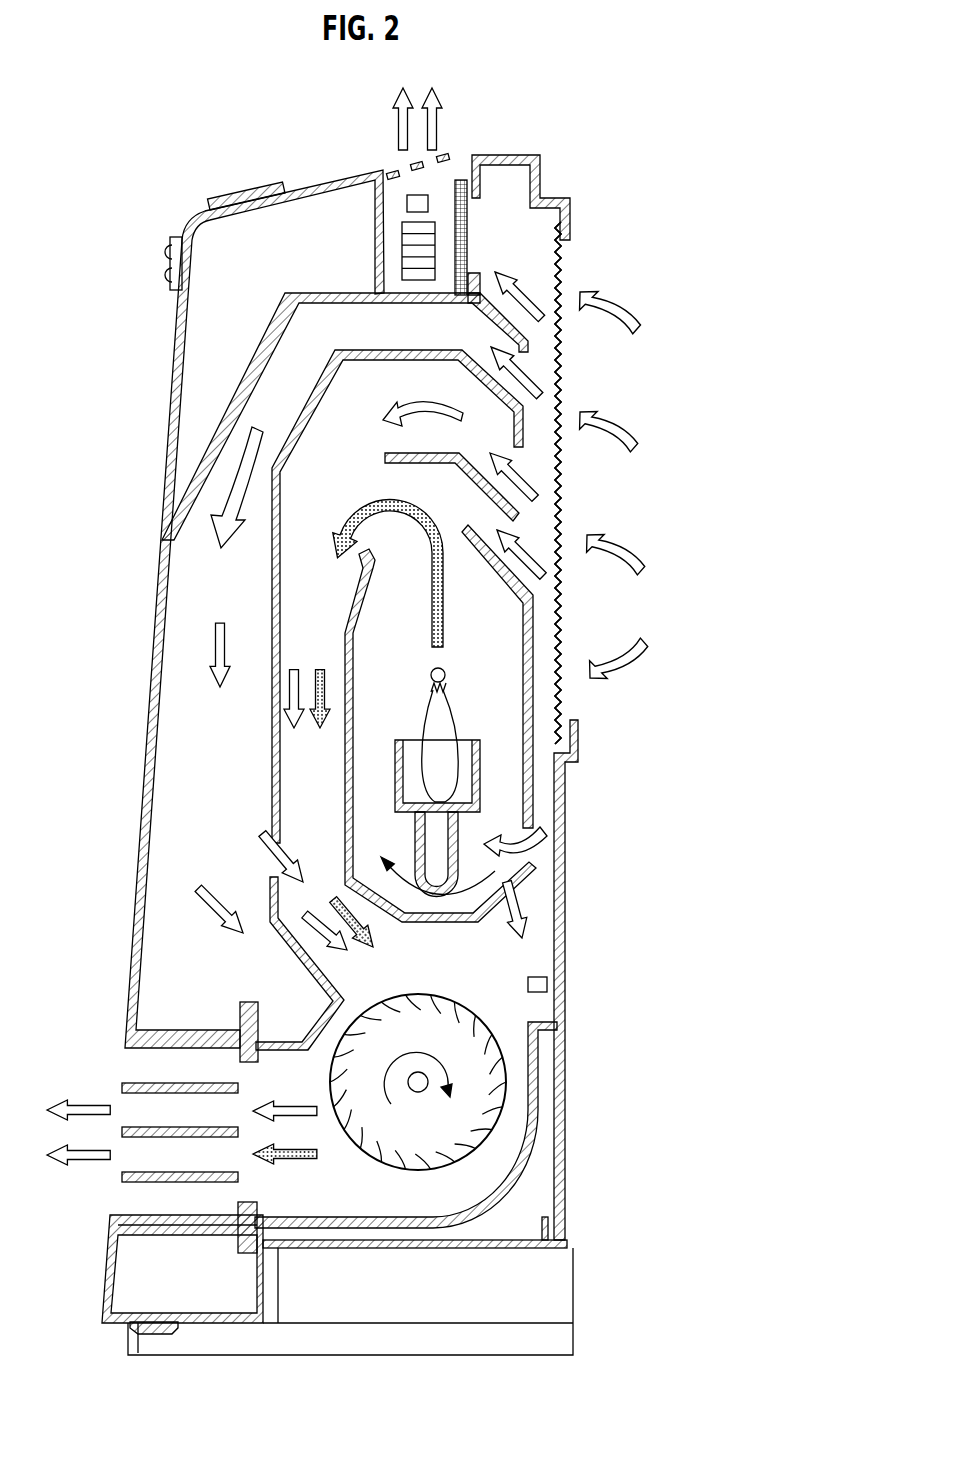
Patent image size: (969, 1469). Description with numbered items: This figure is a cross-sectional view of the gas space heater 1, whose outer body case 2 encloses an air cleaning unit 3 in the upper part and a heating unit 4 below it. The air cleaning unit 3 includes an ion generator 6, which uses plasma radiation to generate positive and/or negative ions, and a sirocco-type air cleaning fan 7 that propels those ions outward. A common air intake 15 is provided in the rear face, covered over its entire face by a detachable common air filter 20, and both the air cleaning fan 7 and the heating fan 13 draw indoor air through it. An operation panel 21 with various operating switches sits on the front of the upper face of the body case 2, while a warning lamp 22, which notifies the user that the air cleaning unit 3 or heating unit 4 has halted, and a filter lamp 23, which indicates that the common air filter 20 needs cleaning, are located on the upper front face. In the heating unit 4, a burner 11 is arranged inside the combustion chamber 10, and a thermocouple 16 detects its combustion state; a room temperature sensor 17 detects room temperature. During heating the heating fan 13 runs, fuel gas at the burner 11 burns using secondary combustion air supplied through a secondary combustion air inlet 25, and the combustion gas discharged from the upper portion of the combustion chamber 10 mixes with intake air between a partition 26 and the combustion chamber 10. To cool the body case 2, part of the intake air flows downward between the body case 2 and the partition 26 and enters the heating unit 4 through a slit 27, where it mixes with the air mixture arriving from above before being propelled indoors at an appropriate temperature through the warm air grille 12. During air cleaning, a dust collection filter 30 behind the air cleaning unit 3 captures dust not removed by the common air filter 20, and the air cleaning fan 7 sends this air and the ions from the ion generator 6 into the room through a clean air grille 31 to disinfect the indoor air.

The gas space heater 1 is at (140, 78).
The body case 2 is at (172, 382).
The air cleaning unit 3 is at (367, 213).
The heating unit 4 is at (488, 935).
The ion generator 6 is at (428, 203).
The air cleaning fan 7 is at (435, 228).
The combustion chamber 10 is at (345, 762).
The burner 11 is at (397, 797).
The warm air grille 12 is at (122, 1200).
The heating fan 13 is at (470, 1087).
The common air intake 15 is at (535, 525).
The thermocouple 16 is at (447, 675).
The room temperature sensor 17 is at (547, 983).
The common air filter 20 is at (562, 387).
The operation panel 21 is at (237, 191).
The warning lamp 22 is at (163, 251).
The filter lamp 23 is at (163, 278).
The secondary combustion air inlet 25 is at (527, 860).
The partition 26 is at (268, 722).
The slit 27 is at (270, 865).
The dust collection filter 30 is at (468, 257).
The clean air grille 31 is at (463, 155).